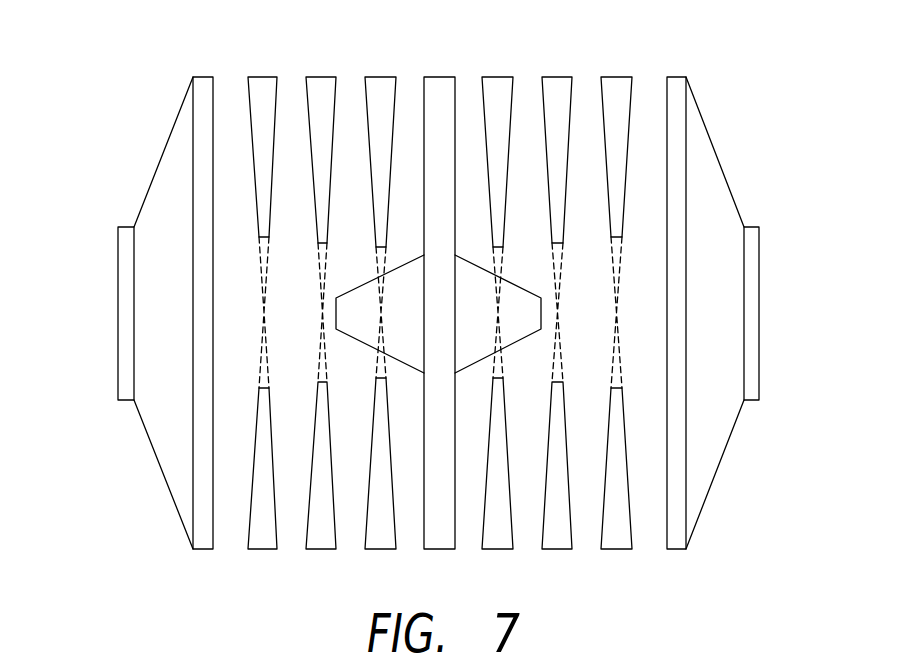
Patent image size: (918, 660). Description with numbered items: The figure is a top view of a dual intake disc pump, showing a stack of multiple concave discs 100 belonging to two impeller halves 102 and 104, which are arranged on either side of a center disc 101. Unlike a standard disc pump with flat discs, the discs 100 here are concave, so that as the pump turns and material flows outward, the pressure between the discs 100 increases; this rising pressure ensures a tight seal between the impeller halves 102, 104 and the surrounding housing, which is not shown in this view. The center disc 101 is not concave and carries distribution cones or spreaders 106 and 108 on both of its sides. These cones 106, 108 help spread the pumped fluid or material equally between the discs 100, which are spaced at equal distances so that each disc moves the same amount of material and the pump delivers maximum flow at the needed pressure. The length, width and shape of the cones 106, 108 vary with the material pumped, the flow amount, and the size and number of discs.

The concave discs 100 is at (617, 75).
The center disc 101 is at (440, 77).
The impeller half 102 is at (163, 152).
The impeller half 104 is at (714, 148).
The distribution cone 106 is at (361, 285).
The distribution cone 108 is at (520, 285).